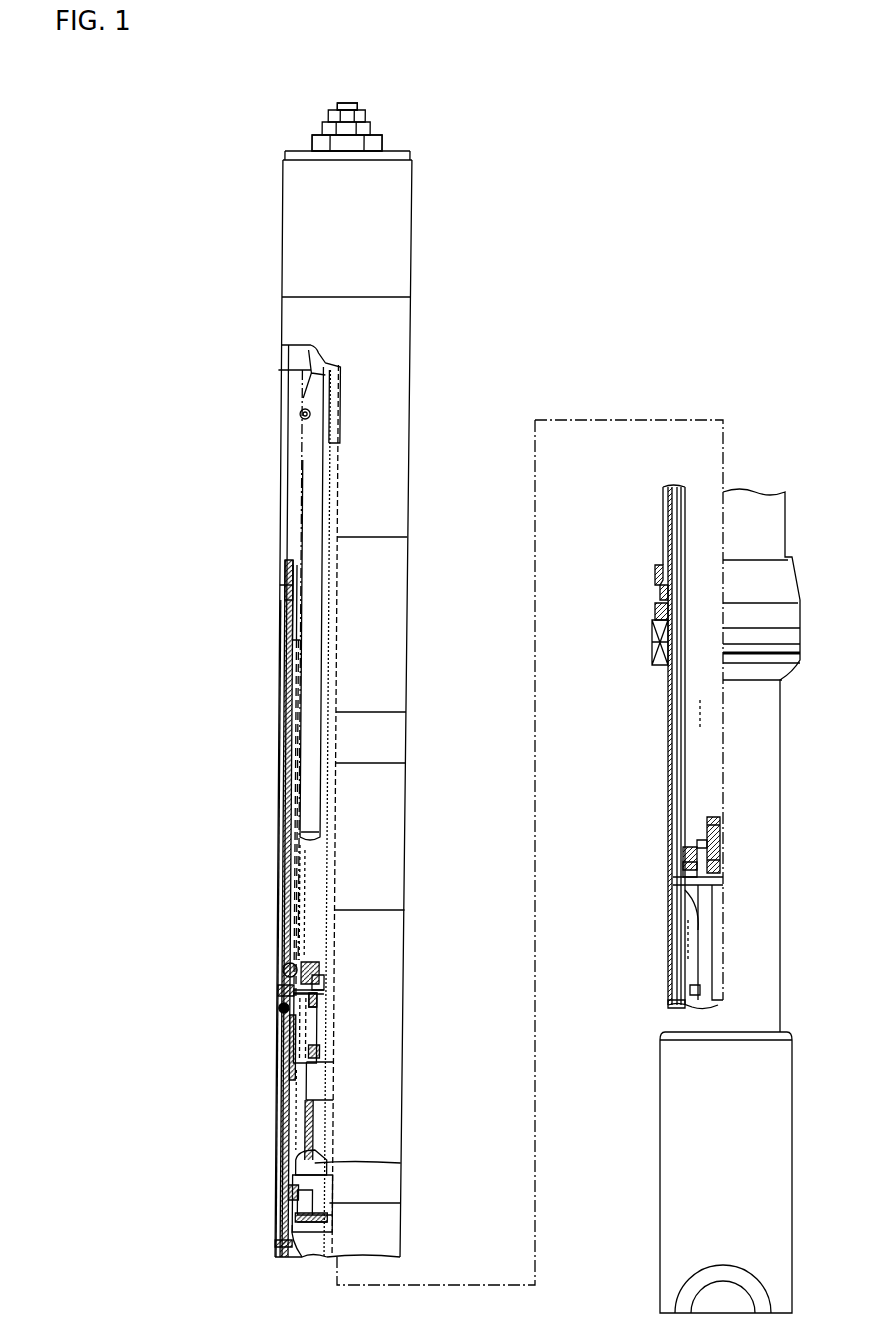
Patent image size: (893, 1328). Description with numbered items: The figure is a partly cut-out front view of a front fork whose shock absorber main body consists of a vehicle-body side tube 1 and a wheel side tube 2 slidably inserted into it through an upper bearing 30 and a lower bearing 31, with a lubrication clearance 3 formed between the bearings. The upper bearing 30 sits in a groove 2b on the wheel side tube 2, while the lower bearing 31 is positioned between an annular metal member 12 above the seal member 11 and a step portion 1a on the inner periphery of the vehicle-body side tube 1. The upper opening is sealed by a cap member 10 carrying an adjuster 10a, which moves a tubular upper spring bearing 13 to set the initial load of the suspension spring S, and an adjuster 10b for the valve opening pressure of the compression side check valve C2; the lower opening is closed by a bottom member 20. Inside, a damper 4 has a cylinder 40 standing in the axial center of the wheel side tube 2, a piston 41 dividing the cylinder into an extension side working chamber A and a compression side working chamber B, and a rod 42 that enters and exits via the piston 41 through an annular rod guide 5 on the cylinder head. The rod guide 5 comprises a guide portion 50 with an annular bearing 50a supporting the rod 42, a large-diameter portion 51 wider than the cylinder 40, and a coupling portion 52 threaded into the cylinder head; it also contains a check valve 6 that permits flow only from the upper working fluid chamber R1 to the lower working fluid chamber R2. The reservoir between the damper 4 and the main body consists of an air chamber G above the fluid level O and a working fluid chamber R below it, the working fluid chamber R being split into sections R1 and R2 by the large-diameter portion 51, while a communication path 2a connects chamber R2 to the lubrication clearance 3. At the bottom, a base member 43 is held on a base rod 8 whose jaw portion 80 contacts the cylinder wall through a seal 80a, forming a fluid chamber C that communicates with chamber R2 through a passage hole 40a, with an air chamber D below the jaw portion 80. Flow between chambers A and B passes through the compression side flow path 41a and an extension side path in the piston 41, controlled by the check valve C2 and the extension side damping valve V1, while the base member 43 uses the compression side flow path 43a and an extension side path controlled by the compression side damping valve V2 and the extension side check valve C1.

The vehicle-body side tube 1 is at (280, 515).
The step portion 1a is at (660, 573).
The wheel side tube 2 is at (290, 720).
The communication path 2a is at (285, 1038).
The groove 2b is at (293, 590).
The lubrication clearance 3 is at (292, 795).
The damper 4 is at (285, 1240).
The rod guide 5 is at (290, 988).
The check valve 6 is at (290, 1008).
The base rod 8 is at (700, 990).
The cap member 10 is at (298, 146).
The adjuster 10a is at (375, 133).
The adjuster 10b is at (365, 108).
The seal member 11 is at (662, 625).
The annular metal member 12 is at (655, 606).
The upper spring bearing 13 is at (300, 370).
The bottom member 20 is at (660, 1095).
The upper bearing 30 is at (290, 608).
The lower bearing 31 is at (660, 590).
The cylinder 40 is at (672, 692).
The passage hole 40a is at (680, 868).
The piston 41 is at (285, 1205).
The compression side flow path 41a is at (298, 1190).
The rod 42 is at (330, 475).
The base member 43 is at (690, 860).
The compression side flow path 43a is at (705, 840).
The guide portion 50 is at (300, 964).
The annular bearing 50a is at (323, 980).
The large-diameter portion 51 is at (320, 1005).
The coupling portion 52 is at (322, 1045).
The jaw portion 80 is at (690, 918).
The seal 80a is at (697, 880).
The extension side working chamber A is at (300, 1100).
The compression side working chamber B is at (700, 715).
The fluid chamber C is at (680, 930).
The extension side check valve C1 is at (710, 825).
The compression side check valve C2 is at (322, 1168).
The air chamber D is at (675, 1000).
The air chamber G is at (320, 655).
The fluid level O is at (315, 832).
The working fluid chamber R is at (308, 905).
The upper working fluid chamber R1 is at (318, 870).
The lower working fluid chamber R2 is at (293, 1135).
The suspension spring S is at (300, 413).
The extension side damping valve V1 is at (310, 1258).
The compression side damping valve V2 is at (720, 880).